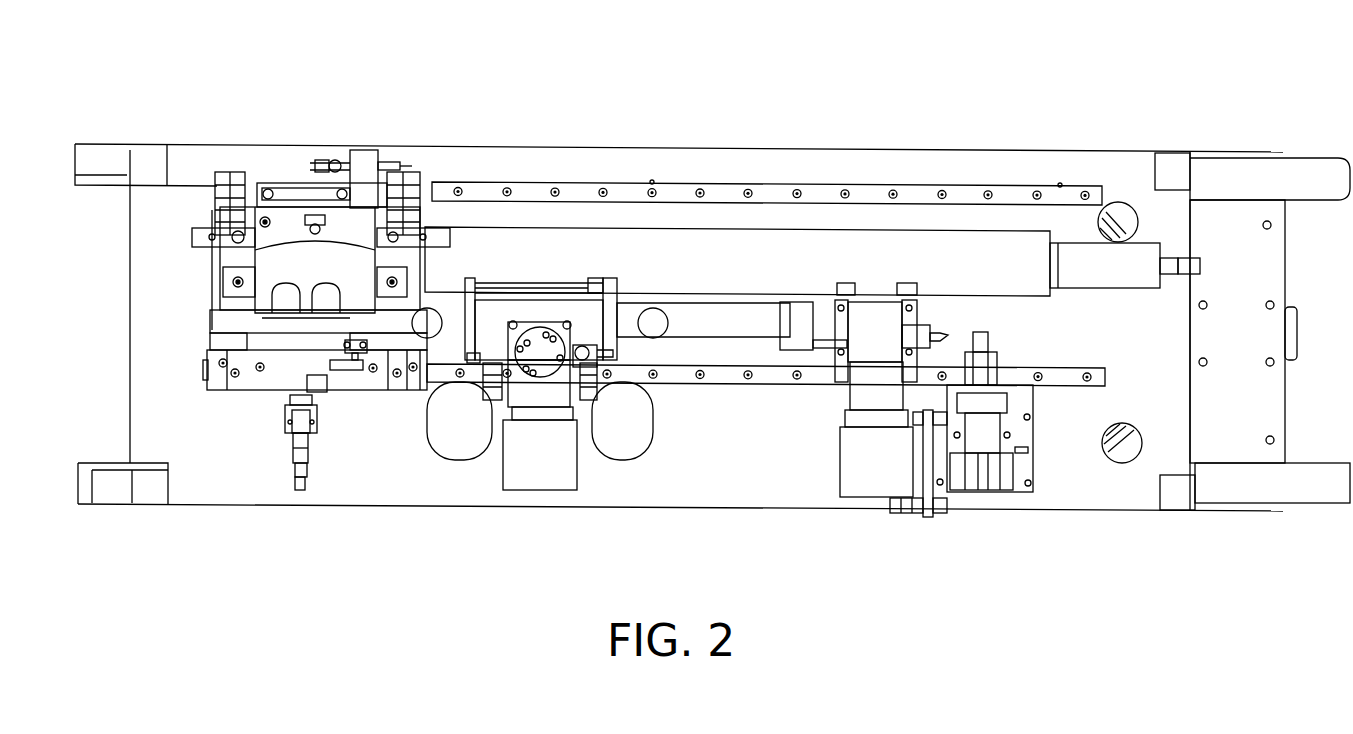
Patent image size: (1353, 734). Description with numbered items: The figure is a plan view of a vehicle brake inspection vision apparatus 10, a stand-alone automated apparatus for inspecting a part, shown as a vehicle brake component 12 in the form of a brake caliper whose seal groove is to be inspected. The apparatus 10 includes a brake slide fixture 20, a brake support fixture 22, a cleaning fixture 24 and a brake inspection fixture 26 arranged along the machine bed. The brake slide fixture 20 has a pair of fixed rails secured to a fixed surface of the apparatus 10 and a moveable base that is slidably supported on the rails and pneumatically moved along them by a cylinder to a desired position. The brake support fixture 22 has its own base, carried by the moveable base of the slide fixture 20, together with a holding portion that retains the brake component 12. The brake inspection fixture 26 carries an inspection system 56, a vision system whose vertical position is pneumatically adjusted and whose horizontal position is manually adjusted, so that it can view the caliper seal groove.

The vehicle brake inspection apparatus 10 is at (699, 321).
The vehicle brake component 12 is at (280, 335).
The brake slide fixture 20 is at (663, 183).
The brake support fixture 22 is at (195, 305).
The cleaning fixture 24 is at (573, 518).
The brake inspection fixture 26 is at (886, 525).
The inspection system 56 is at (928, 307).